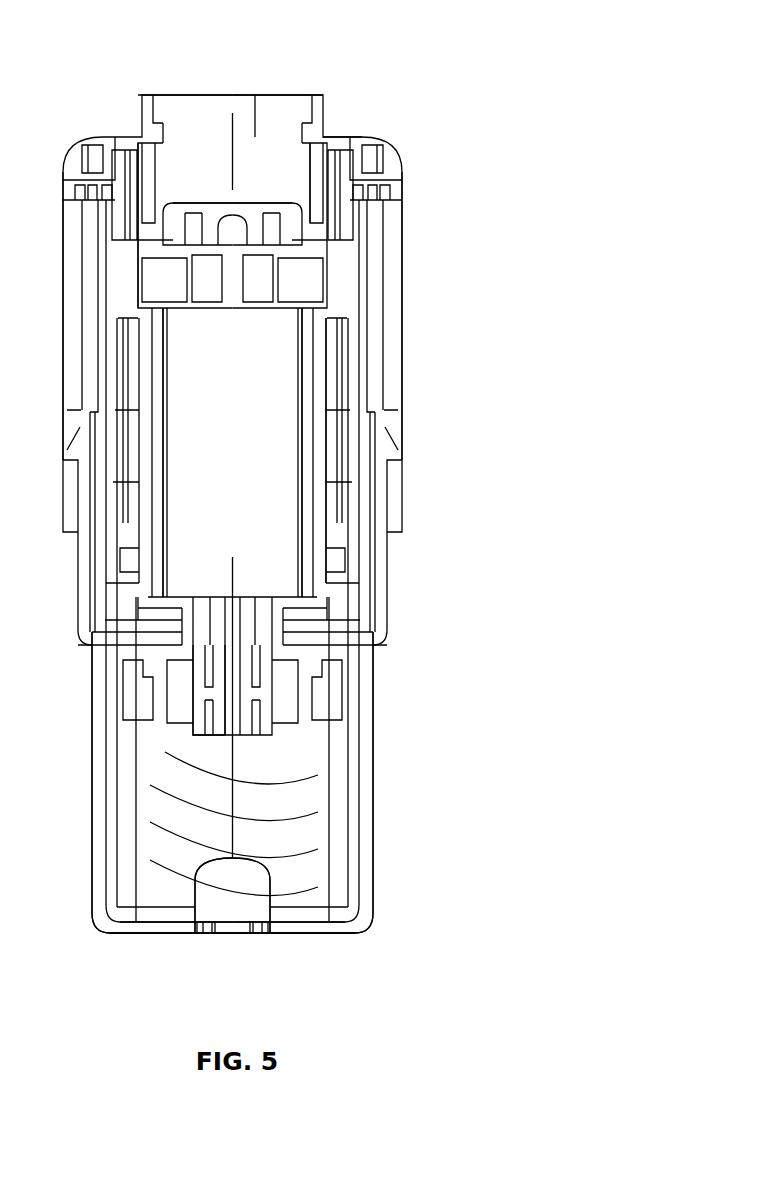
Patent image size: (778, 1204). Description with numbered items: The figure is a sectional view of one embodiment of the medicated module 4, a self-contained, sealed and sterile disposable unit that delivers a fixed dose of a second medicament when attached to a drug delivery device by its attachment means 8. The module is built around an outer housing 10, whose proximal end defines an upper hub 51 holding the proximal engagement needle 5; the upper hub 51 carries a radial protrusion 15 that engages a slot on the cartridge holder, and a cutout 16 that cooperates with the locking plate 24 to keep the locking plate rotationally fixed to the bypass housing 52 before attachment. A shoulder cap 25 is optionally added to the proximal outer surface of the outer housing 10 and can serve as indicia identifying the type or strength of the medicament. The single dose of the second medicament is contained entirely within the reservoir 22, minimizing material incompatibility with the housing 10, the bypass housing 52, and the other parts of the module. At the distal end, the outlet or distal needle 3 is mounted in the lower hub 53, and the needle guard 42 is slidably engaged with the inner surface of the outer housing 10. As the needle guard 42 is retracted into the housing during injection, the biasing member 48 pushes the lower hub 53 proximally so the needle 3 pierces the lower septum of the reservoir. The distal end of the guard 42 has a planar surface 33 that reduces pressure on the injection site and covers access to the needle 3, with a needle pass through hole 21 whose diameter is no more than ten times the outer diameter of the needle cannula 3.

The distal needle 3 is at (237, 828).
The medicated module 4 is at (452, 388).
The proximal engagement needle 5 is at (235, 188).
The attachment means 8 is at (272, 130).
The outer housing 10 is at (75, 283).
The radial protrusion 15 is at (320, 135).
The cutout 16 is at (163, 190).
The needle pass through hole 21 is at (235, 937).
The reservoir 22 is at (262, 430).
The locking plate 24 is at (147, 235).
The shoulder cap 25 is at (350, 137).
The planar surface 33 is at (297, 937).
The needle guard 42 is at (365, 770).
The biasing member 48 is at (200, 878).
The upper hub 51 is at (180, 106).
The bypass housing 52 is at (325, 527).
The lower hub 53 is at (170, 727).